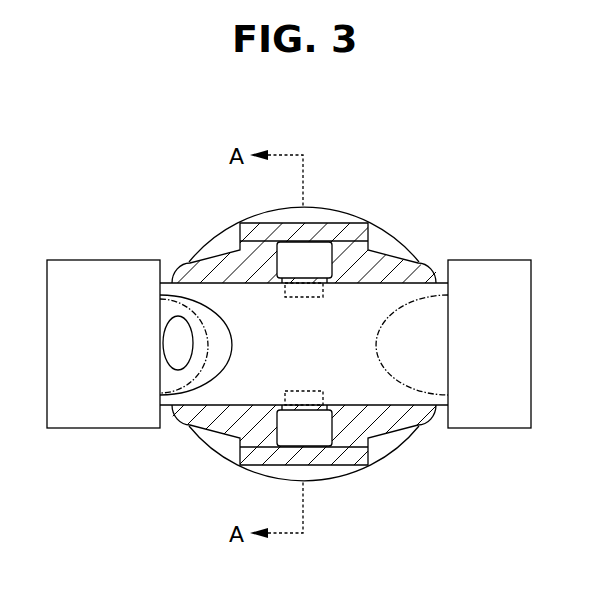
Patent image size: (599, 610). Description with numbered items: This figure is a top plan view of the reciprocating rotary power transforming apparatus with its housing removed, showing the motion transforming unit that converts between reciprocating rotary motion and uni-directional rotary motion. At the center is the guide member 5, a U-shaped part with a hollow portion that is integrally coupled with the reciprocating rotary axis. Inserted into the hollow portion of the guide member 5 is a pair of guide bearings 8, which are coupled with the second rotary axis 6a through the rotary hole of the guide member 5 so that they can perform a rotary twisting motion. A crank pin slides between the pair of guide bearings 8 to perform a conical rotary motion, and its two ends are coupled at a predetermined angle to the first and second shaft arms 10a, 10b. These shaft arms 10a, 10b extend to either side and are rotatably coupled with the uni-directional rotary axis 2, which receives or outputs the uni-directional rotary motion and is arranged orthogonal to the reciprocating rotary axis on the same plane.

The uni-directional rotary axis 2 is at (103, 405).
The guide member 5 is at (402, 432).
The second rotary axis 6a is at (313, 258).
The guide bearings 8 is at (342, 322).
The first shaft arm 10a is at (197, 385).
The second shaft arm 10b is at (455, 395).